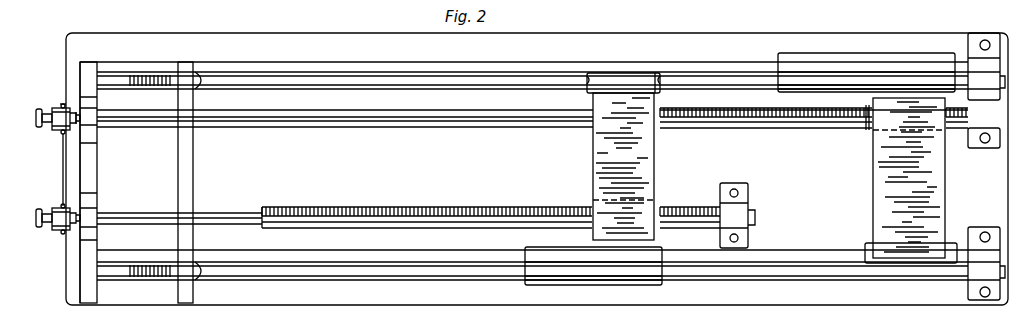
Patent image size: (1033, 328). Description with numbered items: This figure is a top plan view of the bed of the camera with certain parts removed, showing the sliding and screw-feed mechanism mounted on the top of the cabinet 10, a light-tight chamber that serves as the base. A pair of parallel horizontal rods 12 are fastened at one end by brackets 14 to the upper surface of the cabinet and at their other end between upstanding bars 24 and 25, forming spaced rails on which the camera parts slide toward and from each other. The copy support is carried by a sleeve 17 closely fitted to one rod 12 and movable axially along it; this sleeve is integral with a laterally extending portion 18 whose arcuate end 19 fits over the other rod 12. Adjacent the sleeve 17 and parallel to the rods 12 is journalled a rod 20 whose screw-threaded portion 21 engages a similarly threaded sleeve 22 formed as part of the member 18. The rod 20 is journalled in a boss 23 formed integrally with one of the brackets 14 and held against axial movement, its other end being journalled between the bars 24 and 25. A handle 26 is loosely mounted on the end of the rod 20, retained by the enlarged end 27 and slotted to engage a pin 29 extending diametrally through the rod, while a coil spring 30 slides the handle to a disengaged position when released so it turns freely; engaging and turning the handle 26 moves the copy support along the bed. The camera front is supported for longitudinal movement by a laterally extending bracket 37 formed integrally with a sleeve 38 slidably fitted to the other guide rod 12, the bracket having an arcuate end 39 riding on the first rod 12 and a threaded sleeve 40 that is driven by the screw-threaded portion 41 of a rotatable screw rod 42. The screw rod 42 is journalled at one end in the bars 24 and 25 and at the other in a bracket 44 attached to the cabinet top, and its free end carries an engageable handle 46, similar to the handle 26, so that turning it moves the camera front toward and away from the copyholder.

The cabinet 10 is at (64, 35).
The parallel horizontal rods 12 is at (560, 72).
The brackets 14 is at (995, 55).
The sleeve 17 is at (835, 62).
The laterally extending portion 18 is at (873, 170).
The arcuate end 19 is at (867, 247).
The rod 20 is at (500, 128).
The screw-threaded portion 21 is at (765, 128).
The threaded sleeve 22 is at (866, 130).
The boss 23 is at (960, 130).
The bar 24 is at (97, 158).
The bar 25 is at (178, 178).
The handle 26 is at (56, 130).
The enlarged end 27 is at (38, 115).
The pin 29 is at (60, 104).
The coil spring 30 is at (78, 112).
The laterally extending bracket 37 is at (654, 152).
The sleeve 38 is at (618, 285).
The arcuate end 39 is at (657, 73).
The threaded sleeve 40 is at (662, 205).
The screw-threaded portion 41 is at (552, 207).
The screw rod 42 is at (244, 212).
The bracket 44 is at (755, 203).
The handle 46 is at (60, 206).